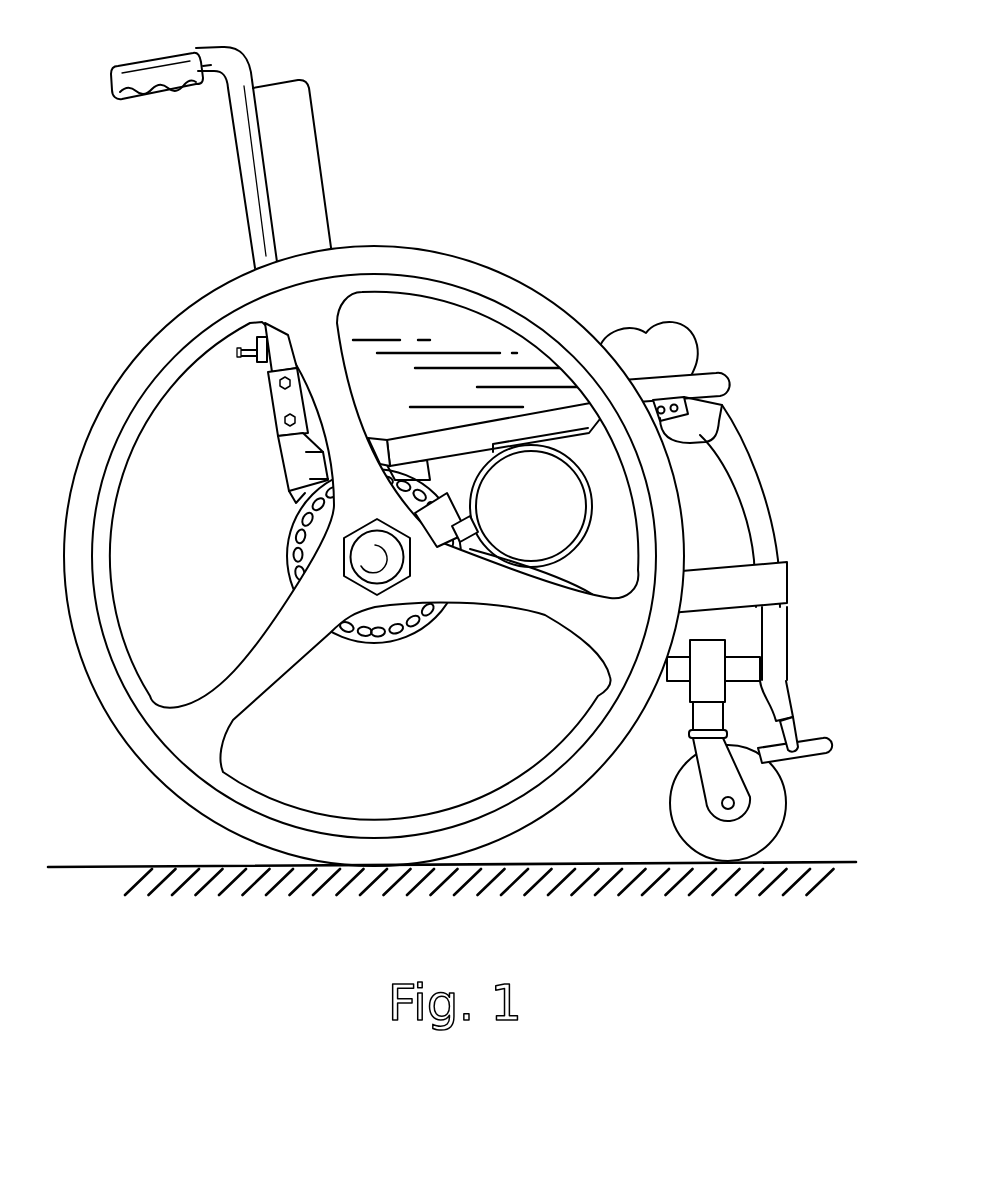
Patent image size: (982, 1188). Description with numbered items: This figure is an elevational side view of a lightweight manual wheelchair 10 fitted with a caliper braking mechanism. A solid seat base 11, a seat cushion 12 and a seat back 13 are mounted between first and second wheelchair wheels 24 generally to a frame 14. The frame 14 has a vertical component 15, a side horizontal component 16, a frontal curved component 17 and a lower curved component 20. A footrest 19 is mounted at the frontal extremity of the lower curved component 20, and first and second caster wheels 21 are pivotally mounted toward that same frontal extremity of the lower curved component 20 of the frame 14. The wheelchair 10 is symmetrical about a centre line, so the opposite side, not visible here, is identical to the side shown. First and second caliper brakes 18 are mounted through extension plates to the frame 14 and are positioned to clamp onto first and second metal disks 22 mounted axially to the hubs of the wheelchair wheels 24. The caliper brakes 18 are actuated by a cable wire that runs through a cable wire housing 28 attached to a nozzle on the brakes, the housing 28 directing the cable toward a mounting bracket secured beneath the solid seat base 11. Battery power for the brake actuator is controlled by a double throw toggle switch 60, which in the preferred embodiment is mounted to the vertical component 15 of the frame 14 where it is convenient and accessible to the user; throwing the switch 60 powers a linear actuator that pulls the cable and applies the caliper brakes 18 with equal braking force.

The manual wheelchair 10 is at (468, 471).
The solid seat base 11 is at (700, 367).
The seat cushion 12 is at (662, 322).
The seat back 13 is at (318, 142).
The frame 14 is at (747, 448).
The vertical component 15 is at (240, 182).
The side horizontal component 16 is at (477, 441).
The frontal curved component 17 is at (765, 511).
The caliper brakes 18 is at (463, 510).
The footrest 19 is at (817, 733).
The lower curved component 20 is at (293, 500).
The caster wheels 21 is at (773, 806).
The disks 22 is at (370, 648).
The wheelchair wheels 24 is at (126, 367).
The cable wire housing 28 is at (590, 517).
The double throw toggle switch 60 is at (236, 353).